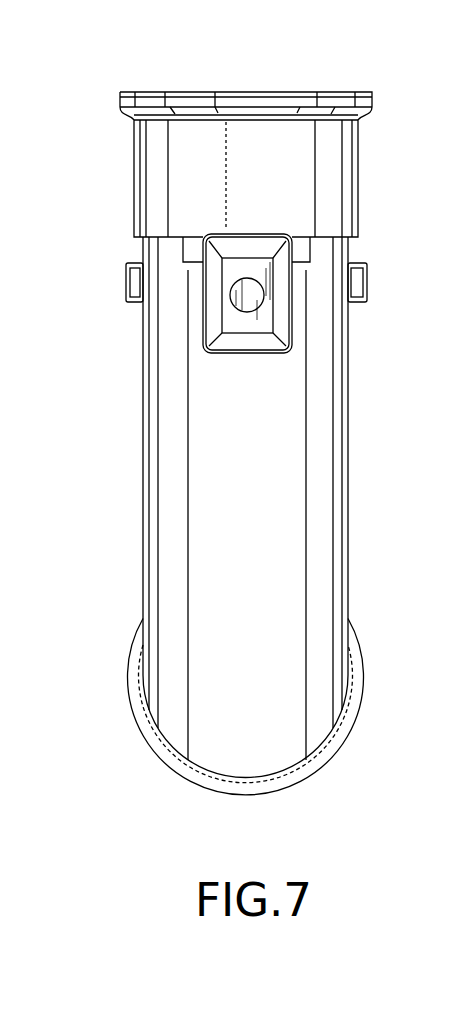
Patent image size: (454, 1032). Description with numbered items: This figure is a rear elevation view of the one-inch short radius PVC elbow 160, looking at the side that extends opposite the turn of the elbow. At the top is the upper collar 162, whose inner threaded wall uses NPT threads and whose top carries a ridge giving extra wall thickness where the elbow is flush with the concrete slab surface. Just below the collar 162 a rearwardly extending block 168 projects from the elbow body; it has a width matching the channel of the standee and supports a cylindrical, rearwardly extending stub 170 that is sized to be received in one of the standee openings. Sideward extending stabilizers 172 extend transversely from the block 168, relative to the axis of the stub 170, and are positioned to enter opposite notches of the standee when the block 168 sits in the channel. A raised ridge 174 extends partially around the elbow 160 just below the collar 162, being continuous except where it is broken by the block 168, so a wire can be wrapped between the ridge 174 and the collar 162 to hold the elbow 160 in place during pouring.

The housing body 160 is at (346, 746).
The collar 162 is at (347, 180).
The block 168 is at (263, 359).
The stub 170 is at (245, 297).
The stabilizers 172 is at (190, 250).
The raised ridge 174 is at (125, 285).